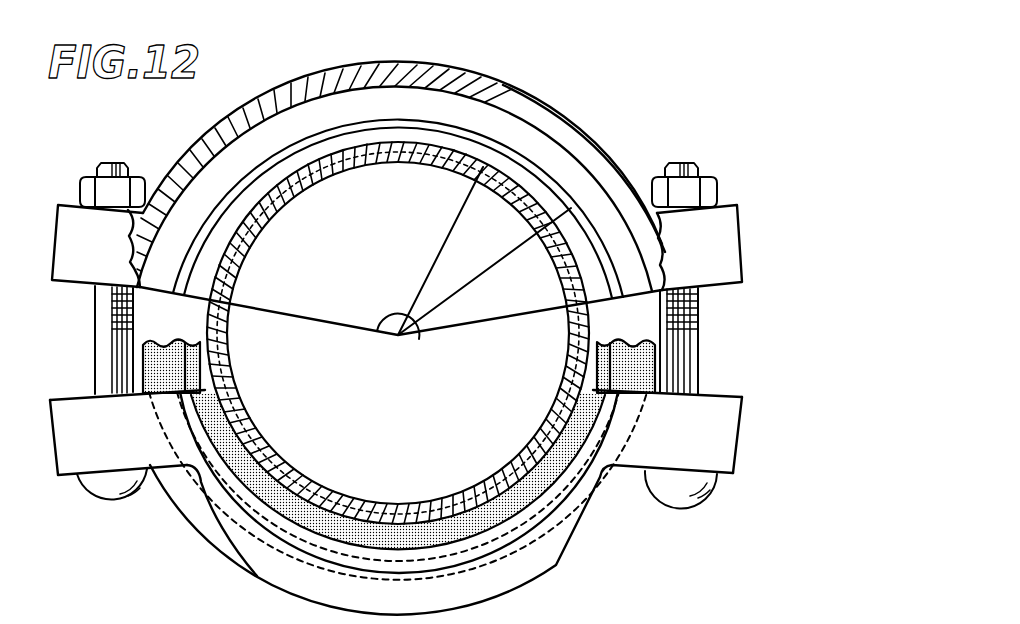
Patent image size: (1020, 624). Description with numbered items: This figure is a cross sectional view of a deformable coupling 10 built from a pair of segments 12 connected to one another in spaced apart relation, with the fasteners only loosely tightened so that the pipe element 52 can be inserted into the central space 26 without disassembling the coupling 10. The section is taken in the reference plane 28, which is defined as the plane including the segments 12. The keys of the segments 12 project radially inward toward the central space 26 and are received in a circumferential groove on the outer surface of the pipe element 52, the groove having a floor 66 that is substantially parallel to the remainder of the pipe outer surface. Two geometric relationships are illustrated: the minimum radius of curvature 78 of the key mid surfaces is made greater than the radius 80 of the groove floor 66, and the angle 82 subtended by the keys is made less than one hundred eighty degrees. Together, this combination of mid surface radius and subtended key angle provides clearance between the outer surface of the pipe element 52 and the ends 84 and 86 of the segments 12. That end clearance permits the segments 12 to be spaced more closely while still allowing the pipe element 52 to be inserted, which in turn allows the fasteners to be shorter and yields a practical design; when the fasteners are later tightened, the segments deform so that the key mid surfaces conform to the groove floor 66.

The coupling 10 is at (575, 108).
The segments 12 is at (440, 74).
The central space 26 is at (393, 308).
The reference plane 28 is at (487, 140).
The pipe element 52 is at (381, 527).
The floor 66 is at (275, 445).
The minimum radius of curvature 78 is at (468, 284).
The radius 80 is at (442, 250).
The angle 82 is at (398, 337).
The end 84 is at (137, 388).
The end 86 is at (668, 386).